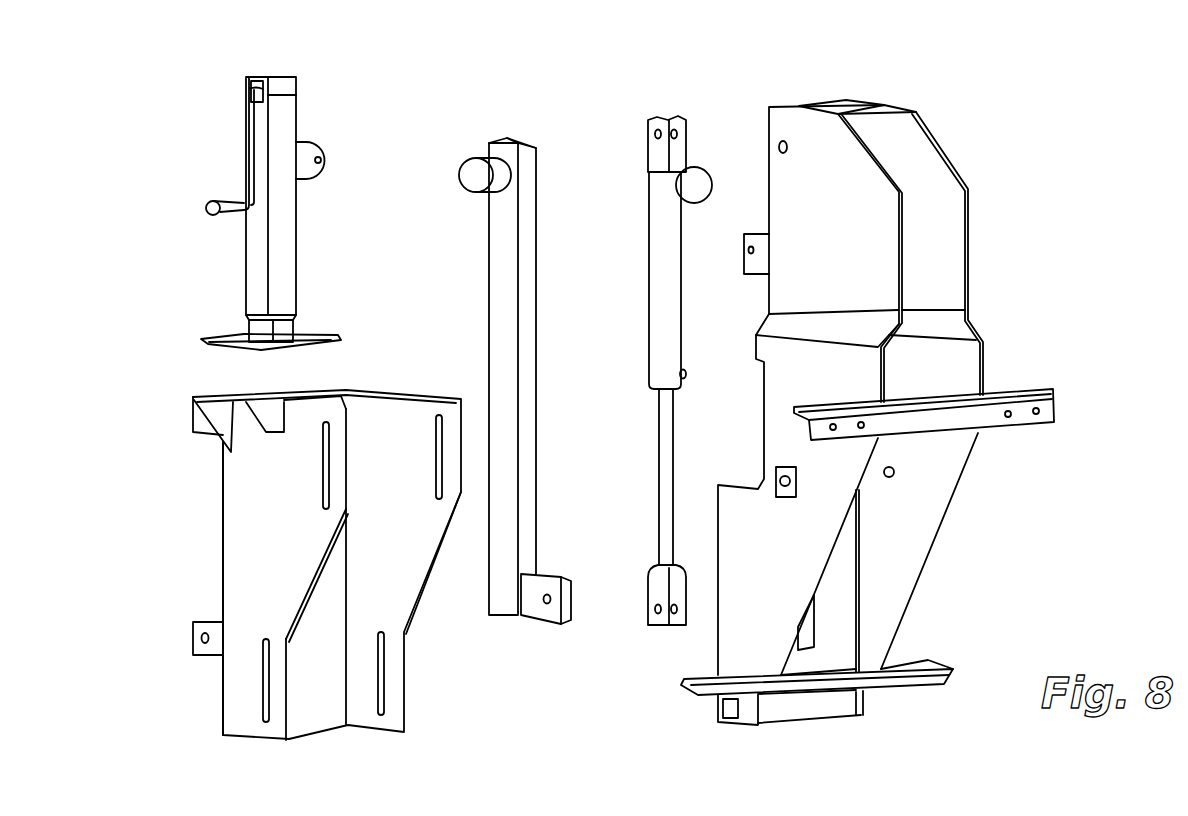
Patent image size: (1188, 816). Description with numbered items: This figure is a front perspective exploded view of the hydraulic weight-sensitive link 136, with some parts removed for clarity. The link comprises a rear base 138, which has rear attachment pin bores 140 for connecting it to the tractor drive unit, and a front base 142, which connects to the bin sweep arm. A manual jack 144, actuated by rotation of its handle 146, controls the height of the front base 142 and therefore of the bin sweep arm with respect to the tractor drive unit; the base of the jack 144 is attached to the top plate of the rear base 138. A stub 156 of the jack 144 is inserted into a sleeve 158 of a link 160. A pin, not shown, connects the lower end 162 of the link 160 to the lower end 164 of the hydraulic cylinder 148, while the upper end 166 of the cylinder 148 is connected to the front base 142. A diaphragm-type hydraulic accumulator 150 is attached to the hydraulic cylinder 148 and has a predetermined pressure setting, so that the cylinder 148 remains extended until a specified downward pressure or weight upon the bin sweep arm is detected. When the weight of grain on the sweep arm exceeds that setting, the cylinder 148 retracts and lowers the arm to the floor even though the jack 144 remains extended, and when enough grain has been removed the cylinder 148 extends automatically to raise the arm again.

The hydraulic weight-sensitive link 136 is at (965, 176).
The rear base 138 is at (220, 460).
The rear attachment pin bores 140 is at (196, 626).
The front base 142 is at (967, 260).
The manual jack 144 is at (250, 84).
The handle 146 is at (211, 213).
The hydraulic cylinder 148 is at (648, 210).
The diaphragm-type hydraulic accumulator 150 is at (714, 168).
The stub 156 is at (320, 149).
The sleeve 158 is at (470, 175).
The link 160 is at (508, 141).
The lower end of link 162 is at (537, 607).
The lower end of cylinder 164 is at (657, 588).
The upper end of cylinder 166 is at (678, 116).